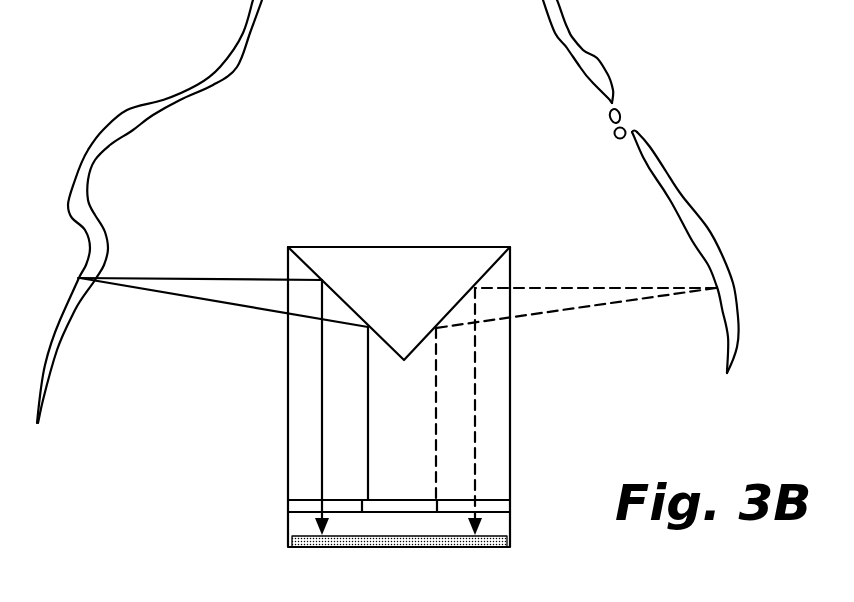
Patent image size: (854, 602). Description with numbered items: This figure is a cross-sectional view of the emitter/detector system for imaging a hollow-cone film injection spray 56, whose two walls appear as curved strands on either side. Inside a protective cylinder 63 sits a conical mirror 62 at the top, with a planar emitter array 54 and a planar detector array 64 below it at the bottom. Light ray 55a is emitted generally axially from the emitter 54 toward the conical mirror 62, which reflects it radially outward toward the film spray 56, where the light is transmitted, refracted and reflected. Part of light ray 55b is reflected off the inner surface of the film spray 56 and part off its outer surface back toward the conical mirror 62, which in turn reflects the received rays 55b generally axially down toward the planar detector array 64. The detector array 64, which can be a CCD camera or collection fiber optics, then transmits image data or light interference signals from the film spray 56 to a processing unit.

The hollow-cone film injection spray 56 is at (93, 230).
The conical mirror 62 is at (408, 245).
The protective cylinder 63 is at (287, 361).
The light ray path 55a is at (435, 387).
The light ray path 55b is at (320, 412).
The planar emitter array 54 is at (398, 507).
The planar detector array 64 is at (462, 548).